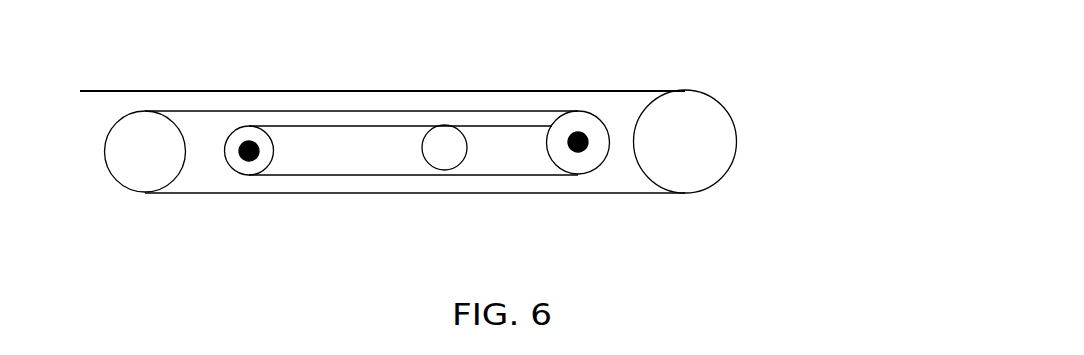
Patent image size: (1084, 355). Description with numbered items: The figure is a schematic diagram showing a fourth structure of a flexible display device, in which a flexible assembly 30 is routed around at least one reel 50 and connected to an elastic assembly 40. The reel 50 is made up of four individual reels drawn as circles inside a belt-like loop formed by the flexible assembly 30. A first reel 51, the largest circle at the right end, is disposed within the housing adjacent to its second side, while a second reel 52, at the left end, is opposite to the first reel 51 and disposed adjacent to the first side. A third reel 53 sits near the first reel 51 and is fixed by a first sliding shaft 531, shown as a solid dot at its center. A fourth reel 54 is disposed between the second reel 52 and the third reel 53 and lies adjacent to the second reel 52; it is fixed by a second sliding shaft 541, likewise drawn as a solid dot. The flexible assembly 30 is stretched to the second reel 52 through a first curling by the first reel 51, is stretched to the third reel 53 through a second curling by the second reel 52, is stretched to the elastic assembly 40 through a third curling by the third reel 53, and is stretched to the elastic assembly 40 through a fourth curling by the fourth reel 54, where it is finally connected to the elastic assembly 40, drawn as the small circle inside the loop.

The flexible assembly 30 is at (327, 90).
The elastic assembly 40 is at (444, 148).
The reel 50 is at (922, 54).
The first reel 51 is at (686, 142).
The second reel 52 is at (145, 151).
The third reel 53 is at (547, 143).
The first sliding shaft 531 is at (578, 132).
The fourth reel 54 is at (273, 150).
The second sliding shaft 541 is at (240, 152).